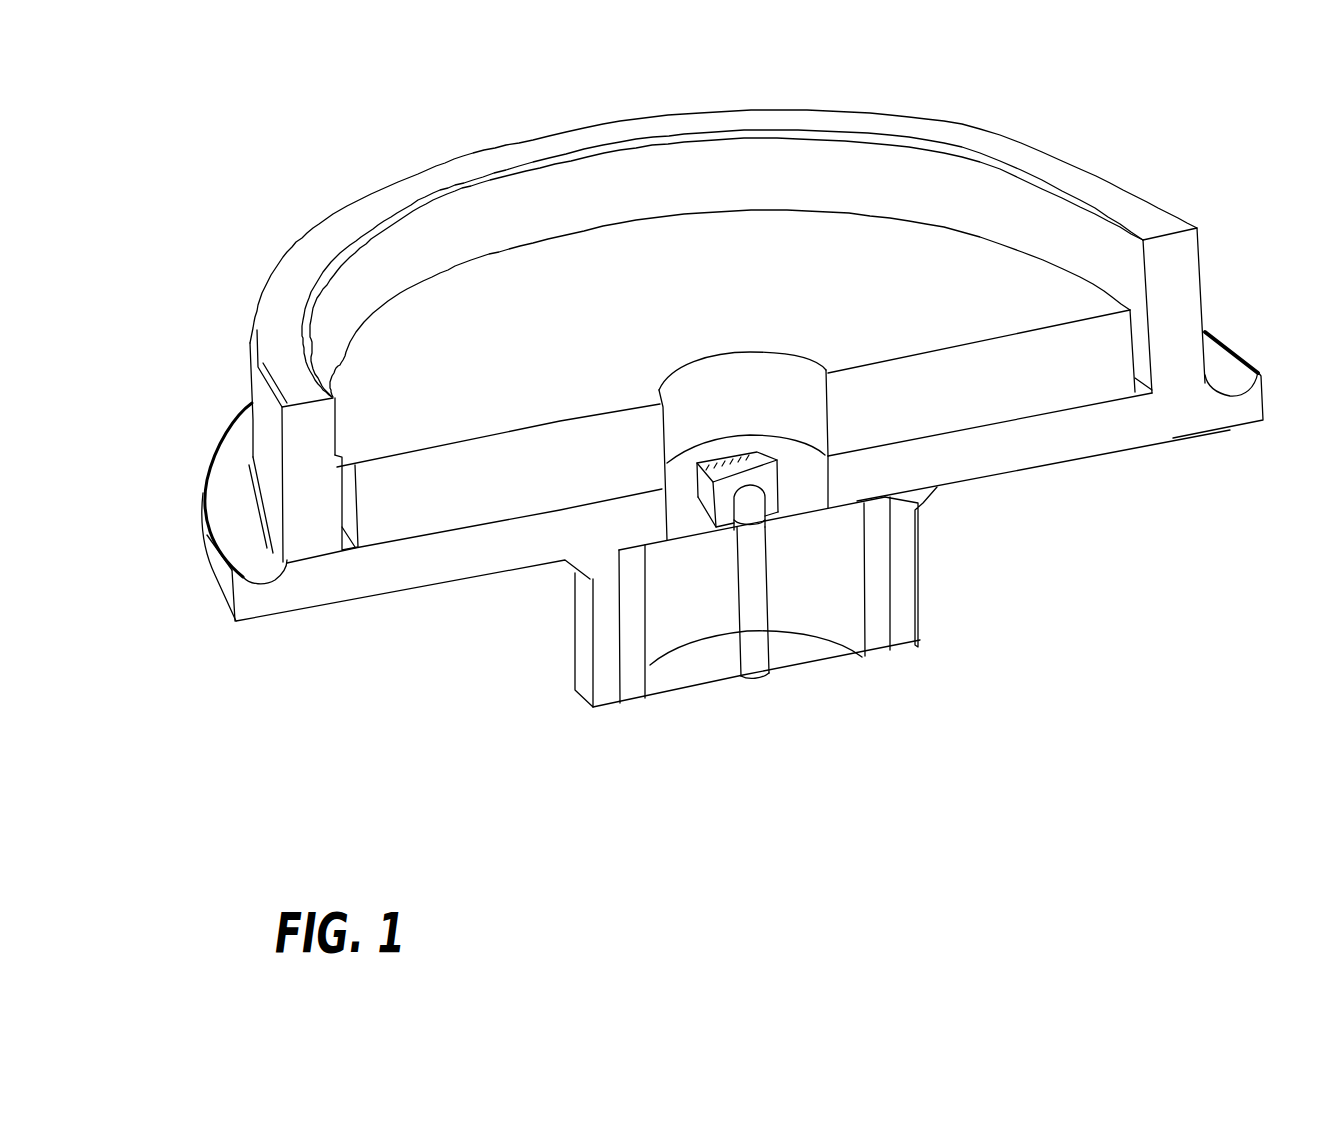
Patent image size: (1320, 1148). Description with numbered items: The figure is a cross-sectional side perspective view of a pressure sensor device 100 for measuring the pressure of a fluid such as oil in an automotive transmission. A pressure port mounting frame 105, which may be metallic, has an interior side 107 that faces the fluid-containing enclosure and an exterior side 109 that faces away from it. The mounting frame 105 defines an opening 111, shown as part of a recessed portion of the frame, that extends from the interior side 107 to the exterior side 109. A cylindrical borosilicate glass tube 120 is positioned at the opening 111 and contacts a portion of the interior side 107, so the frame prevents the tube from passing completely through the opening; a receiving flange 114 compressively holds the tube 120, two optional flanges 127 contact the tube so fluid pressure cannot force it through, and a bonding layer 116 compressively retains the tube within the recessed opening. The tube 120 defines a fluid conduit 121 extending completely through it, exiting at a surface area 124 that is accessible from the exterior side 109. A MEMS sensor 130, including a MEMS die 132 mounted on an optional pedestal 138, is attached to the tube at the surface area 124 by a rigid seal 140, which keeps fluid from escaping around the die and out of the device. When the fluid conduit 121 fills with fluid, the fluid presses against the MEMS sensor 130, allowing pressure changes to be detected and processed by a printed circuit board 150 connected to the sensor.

The pressure sensor device 100 is at (477, 110).
The pressure port mounting frame 105 is at (440, 572).
The interior side 107 is at (189, 469).
The exterior side 109 is at (189, 306).
The opening 111 is at (858, 724).
The receiving flange 114 is at (603, 642).
The bonding layer 116 is at (625, 633).
The tube 120 is at (827, 595).
The fluid conduit 121 is at (755, 657).
The surface area 124 is at (699, 530).
The flanges 127 is at (636, 515).
The MEMS sensor 130 is at (698, 400).
The MEMS die 132 is at (758, 463).
The pedestal 138 is at (770, 504).
The rigid seal 140 is at (777, 515).
The printed circuit board 150 is at (558, 445).